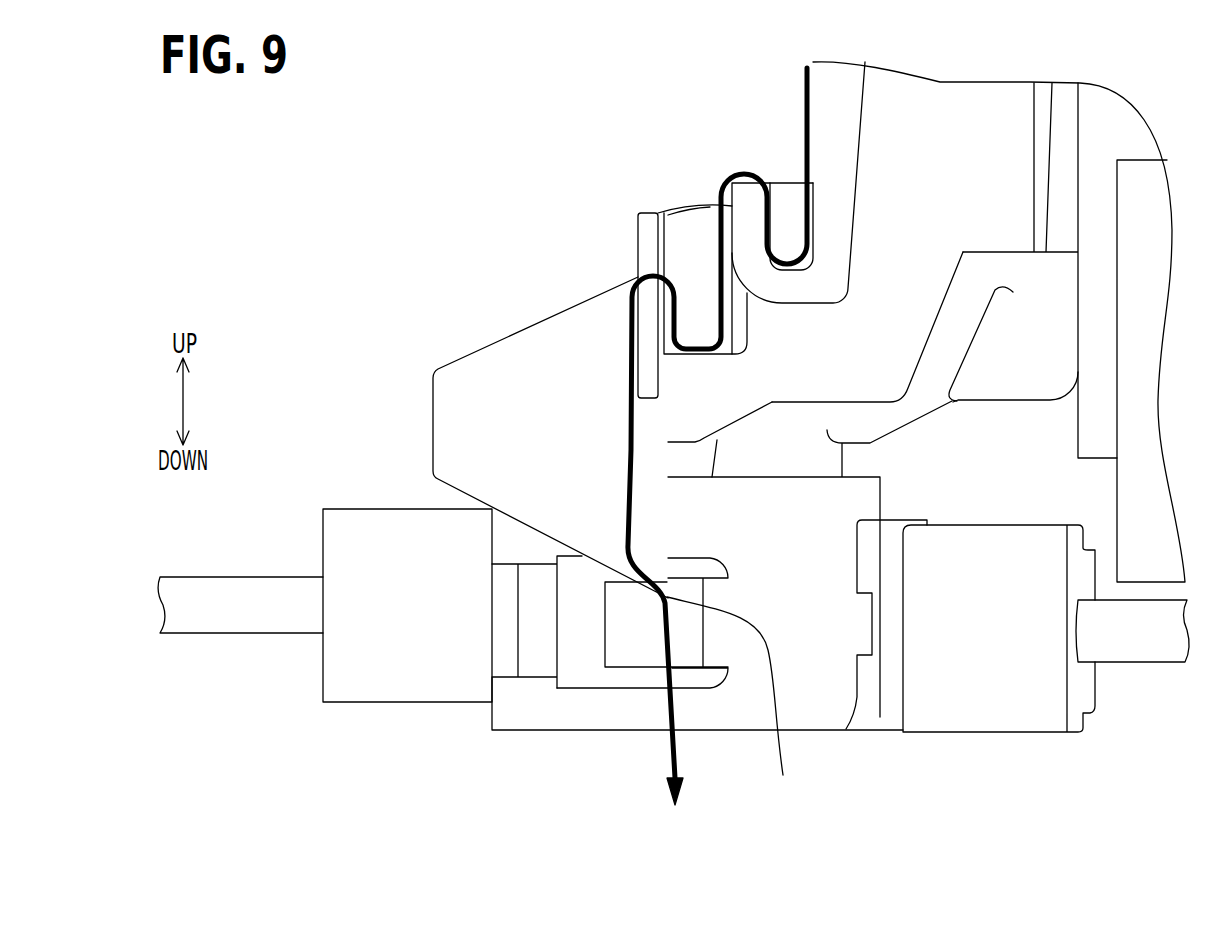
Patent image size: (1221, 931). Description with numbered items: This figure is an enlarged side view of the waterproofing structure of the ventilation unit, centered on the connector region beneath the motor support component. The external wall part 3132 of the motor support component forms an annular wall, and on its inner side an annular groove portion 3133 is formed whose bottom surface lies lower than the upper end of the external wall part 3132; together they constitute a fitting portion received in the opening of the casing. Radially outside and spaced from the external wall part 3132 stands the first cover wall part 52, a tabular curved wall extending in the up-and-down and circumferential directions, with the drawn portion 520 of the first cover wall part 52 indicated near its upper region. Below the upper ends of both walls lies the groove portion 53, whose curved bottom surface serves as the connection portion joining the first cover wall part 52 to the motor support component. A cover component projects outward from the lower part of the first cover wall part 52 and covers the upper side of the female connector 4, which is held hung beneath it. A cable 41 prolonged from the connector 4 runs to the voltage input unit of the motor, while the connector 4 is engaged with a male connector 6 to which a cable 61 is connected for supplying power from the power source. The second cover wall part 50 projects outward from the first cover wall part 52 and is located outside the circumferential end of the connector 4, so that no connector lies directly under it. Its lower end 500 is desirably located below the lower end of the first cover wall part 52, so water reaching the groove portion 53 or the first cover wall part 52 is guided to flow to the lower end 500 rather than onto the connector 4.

The connector 4 is at (565, 720).
The male connector 6 is at (383, 703).
The cable 61 is at (220, 628).
The cable 41 is at (1128, 652).
The second cover wall part 50 is at (522, 333).
The first cover wall part 52 is at (650, 212).
The tip of holding portion 520 is at (648, 240).
The groove portion 53 is at (717, 323).
The lower end of the second cover wall part 500 is at (738, 703).
The external wall part 3132 is at (745, 170).
The annular groove portion 3133 is at (788, 267).